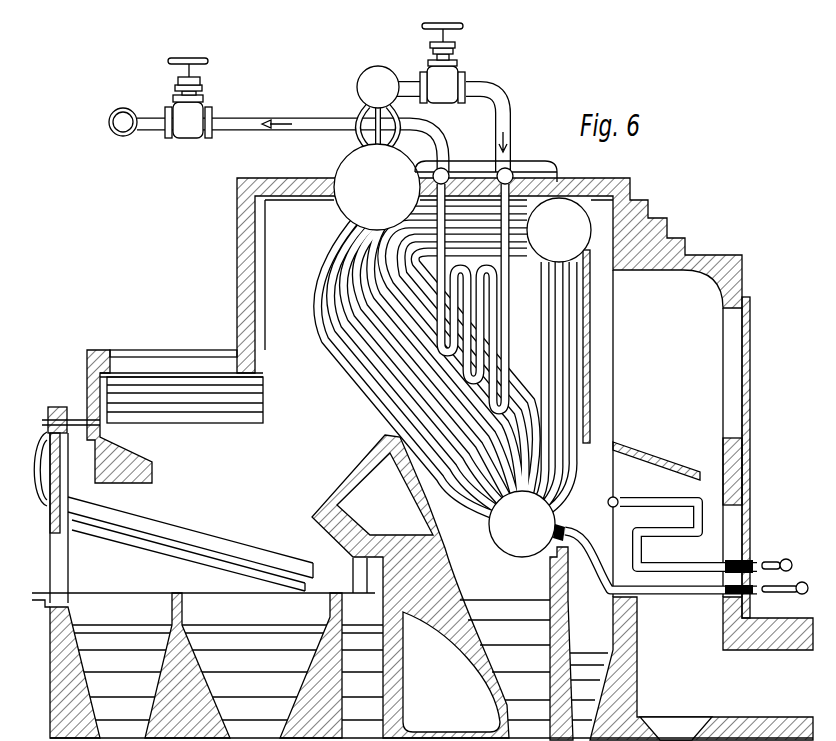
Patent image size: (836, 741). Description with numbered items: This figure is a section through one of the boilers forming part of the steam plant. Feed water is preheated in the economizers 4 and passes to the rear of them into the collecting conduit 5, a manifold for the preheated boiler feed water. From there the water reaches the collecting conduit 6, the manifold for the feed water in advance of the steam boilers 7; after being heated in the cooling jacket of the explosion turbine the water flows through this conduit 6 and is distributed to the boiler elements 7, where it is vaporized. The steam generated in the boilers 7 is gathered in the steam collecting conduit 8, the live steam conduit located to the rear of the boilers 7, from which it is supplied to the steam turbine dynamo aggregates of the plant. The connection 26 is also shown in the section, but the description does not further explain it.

The economizer 4 is at (683, 566).
The collecting conduit for preheated boiler feed water 5 is at (610, 498).
The collecting conduit for feed water 6 is at (800, 594).
The steam boiler 7 is at (570, 242).
The steam collecting conduit 8 is at (124, 126).
The pipe connection 26 is at (786, 559).